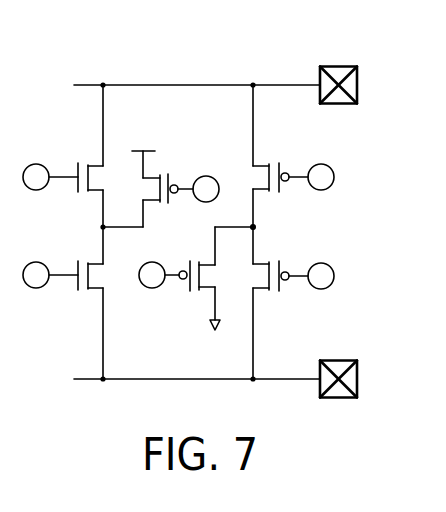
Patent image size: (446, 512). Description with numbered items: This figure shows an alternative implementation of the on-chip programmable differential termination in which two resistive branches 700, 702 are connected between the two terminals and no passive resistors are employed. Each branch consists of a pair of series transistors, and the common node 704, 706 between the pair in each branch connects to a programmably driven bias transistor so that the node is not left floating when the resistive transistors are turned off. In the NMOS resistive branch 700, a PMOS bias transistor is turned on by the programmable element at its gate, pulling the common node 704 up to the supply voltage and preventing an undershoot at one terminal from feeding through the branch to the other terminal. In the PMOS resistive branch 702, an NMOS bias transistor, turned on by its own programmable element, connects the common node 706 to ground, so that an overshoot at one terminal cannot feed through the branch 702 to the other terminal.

The resistive branch 700 is at (140, 73).
The resistive branch 702 is at (290, 73).
The common node 704 is at (103, 227).
The common node 706 is at (253, 227).